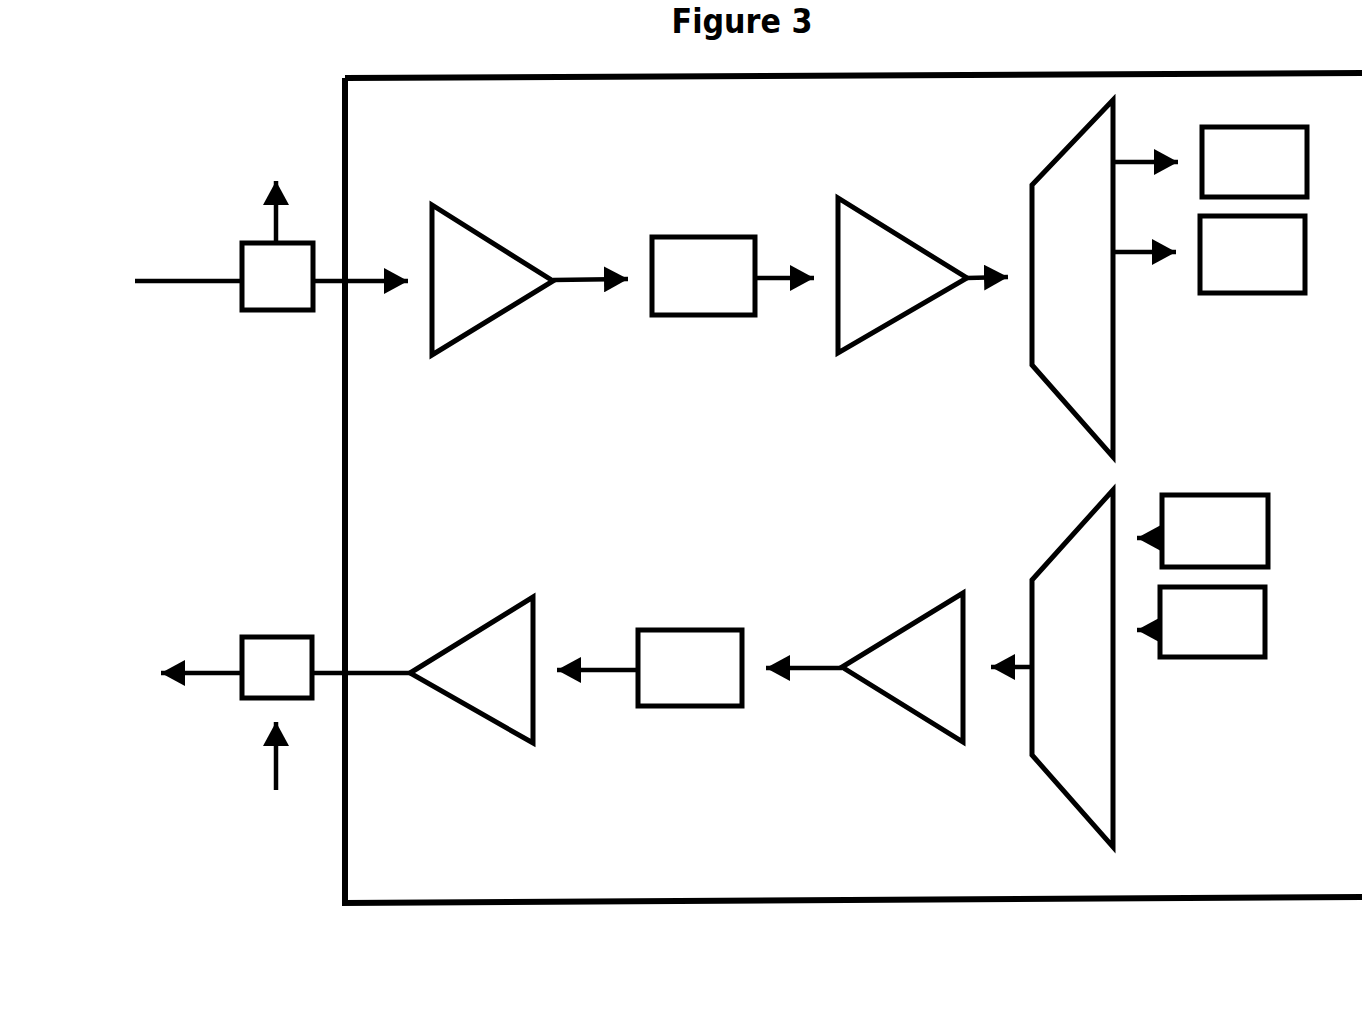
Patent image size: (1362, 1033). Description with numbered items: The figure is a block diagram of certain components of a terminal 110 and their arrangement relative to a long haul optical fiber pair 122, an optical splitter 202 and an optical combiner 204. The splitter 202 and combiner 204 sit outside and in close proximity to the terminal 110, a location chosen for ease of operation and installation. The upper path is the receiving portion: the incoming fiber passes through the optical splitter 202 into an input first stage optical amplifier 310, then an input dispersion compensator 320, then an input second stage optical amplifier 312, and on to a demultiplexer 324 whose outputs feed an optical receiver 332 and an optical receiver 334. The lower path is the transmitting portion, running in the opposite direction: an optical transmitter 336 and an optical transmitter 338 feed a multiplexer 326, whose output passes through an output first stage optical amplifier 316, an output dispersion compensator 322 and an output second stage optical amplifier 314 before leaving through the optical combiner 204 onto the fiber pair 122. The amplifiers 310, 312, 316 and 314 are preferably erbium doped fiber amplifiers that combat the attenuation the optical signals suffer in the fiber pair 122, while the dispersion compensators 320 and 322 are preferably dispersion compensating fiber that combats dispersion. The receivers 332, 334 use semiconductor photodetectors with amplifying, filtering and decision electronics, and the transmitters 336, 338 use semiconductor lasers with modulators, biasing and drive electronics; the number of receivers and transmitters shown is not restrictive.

The terminal 110 is at (853, 488).
The long haul optical fiber pair 122 is at (188, 383).
The optical splitter 202 is at (277, 245).
The optical combiner 204 is at (285, 713).
The input first stage optical amplifier 310 is at (433, 280).
The input second stage optical amplifier 312 is at (861, 275).
The output second stage optical amplifier 314 is at (524, 670).
The output first stage optical amplifier 316 is at (902, 667).
The input dispersion compensator 320 is at (654, 276).
The output dispersion compensator 322 is at (740, 668).
The demultiplexer 324 is at (1040, 278).
The multiplexer 326 is at (1052, 668).
The optical receiver 332 is at (1210, 162).
The optical receiver 334 is at (1209, 254).
The optical transmitter 336 is at (1202, 531).
The optical transmitter 338 is at (1201, 622).